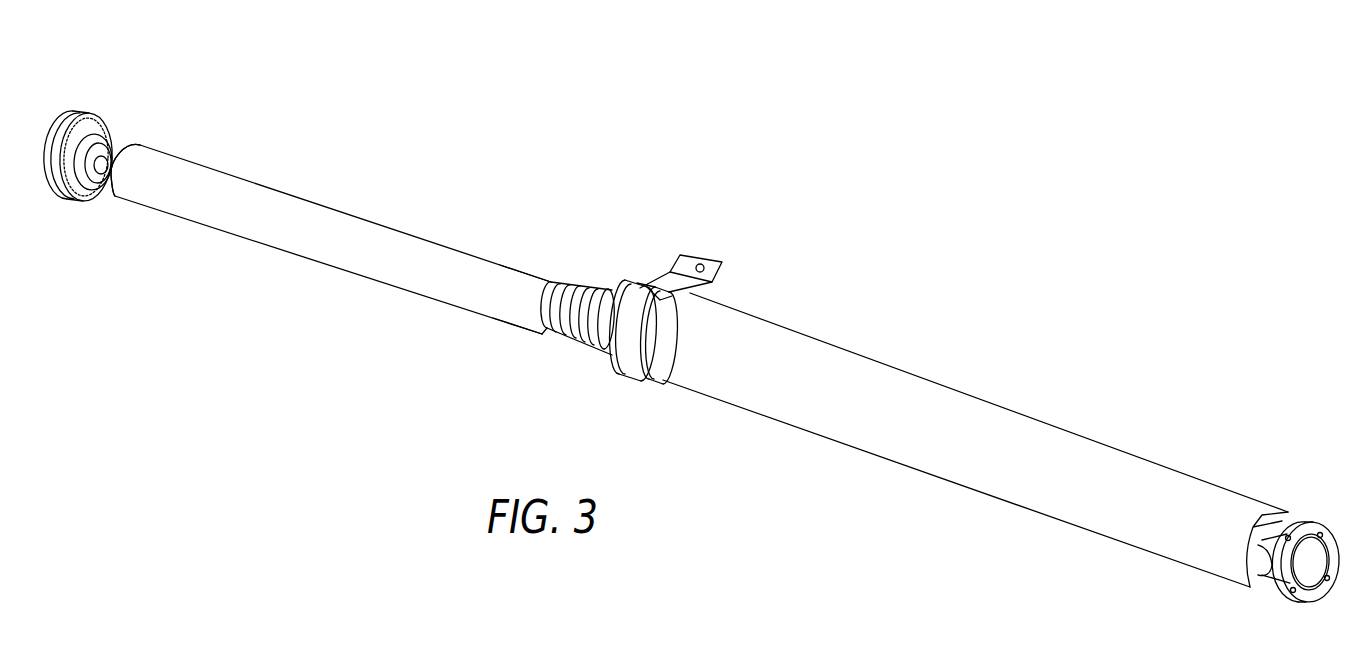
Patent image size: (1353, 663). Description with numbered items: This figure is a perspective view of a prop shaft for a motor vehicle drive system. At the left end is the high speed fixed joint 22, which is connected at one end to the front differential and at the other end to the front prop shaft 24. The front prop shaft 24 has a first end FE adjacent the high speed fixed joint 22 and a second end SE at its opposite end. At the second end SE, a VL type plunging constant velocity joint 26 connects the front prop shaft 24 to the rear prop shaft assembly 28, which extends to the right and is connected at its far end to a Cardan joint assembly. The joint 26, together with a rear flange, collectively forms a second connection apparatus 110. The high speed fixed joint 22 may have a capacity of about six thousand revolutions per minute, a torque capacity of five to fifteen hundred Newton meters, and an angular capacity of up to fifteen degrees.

The high speed fixed joint 22 is at (80, 110).
The front prop shaft 24 is at (320, 212).
The first end FE is at (133, 148).
The second end SE is at (527, 317).
The second connection apparatus 110 is at (614, 240).
The VL style plunging constant velocity joint 26 is at (638, 287).
The rear prop shaft assembly 28 is at (862, 377).